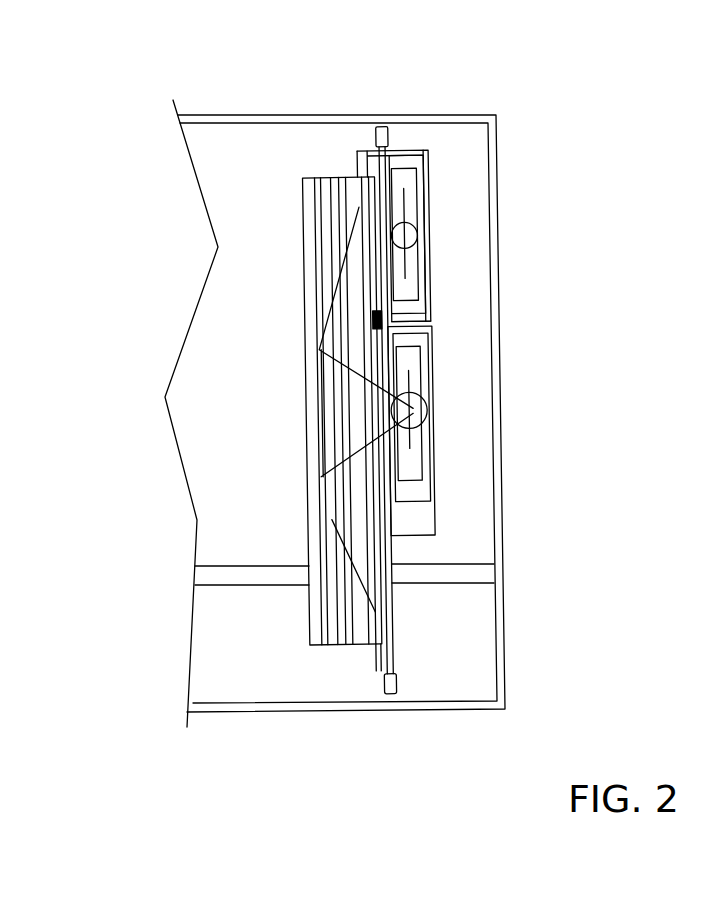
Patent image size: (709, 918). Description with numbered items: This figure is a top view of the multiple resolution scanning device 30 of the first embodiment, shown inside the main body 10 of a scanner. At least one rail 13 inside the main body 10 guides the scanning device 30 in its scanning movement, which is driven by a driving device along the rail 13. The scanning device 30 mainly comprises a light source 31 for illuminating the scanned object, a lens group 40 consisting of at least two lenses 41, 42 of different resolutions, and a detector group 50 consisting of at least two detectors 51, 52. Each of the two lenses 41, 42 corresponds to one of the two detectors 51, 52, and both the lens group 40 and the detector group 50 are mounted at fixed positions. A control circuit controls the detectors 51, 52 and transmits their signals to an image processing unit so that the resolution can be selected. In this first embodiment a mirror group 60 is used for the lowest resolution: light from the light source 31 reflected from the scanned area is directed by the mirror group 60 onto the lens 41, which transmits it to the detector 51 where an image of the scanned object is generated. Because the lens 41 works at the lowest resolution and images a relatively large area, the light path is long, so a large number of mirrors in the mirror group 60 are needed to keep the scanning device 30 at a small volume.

The main body 10 is at (495, 380).
The rail 13 is at (470, 570).
The scanning device 30 is at (306, 336).
The light source 31 is at (393, 658).
The lens group 40 is at (437, 257).
The lens 41 is at (425, 418).
The lens 42 is at (412, 236).
The detector group 50 is at (441, 168).
The detector 51 is at (435, 363).
The detector 52 is at (408, 190).
The mirror group 60 is at (343, 668).